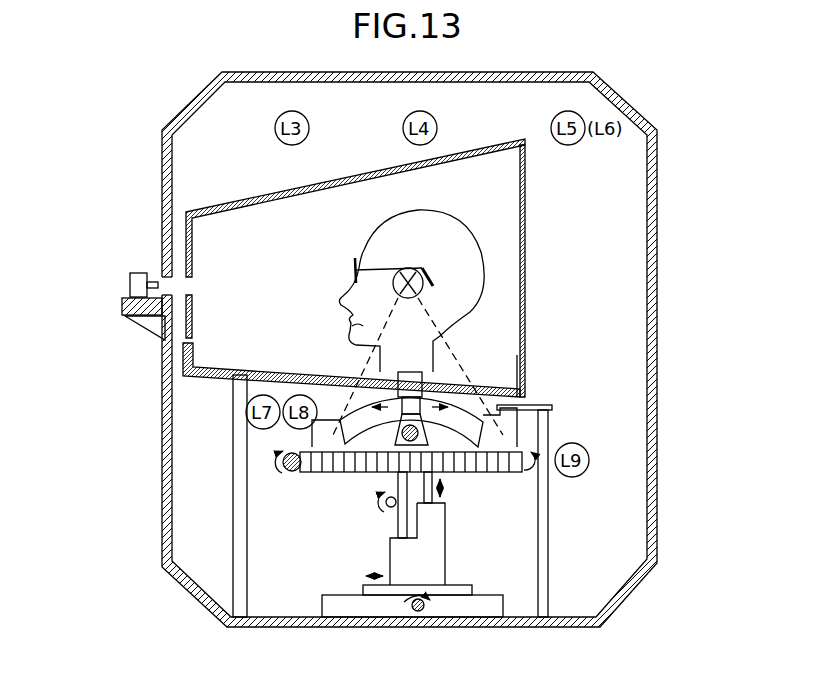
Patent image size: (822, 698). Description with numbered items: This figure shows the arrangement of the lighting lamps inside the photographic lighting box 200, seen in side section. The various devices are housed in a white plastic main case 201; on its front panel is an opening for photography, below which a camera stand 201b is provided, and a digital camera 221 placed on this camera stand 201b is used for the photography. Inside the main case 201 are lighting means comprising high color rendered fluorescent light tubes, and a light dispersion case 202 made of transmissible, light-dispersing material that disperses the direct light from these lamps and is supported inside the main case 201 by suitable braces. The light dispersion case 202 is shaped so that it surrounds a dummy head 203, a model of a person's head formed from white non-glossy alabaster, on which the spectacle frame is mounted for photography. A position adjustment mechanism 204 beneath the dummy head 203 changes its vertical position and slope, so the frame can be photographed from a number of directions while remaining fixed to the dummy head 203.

The photographic lighting box 200 is at (656, 602).
The main case 201 is at (659, 300).
The camera stand 201b is at (131, 318).
The light dispersion case 202 is at (540, 272).
The dummy head 203 is at (448, 212).
The position adjustment mechanism 204 is at (466, 505).
The digital camera 221 is at (130, 290).